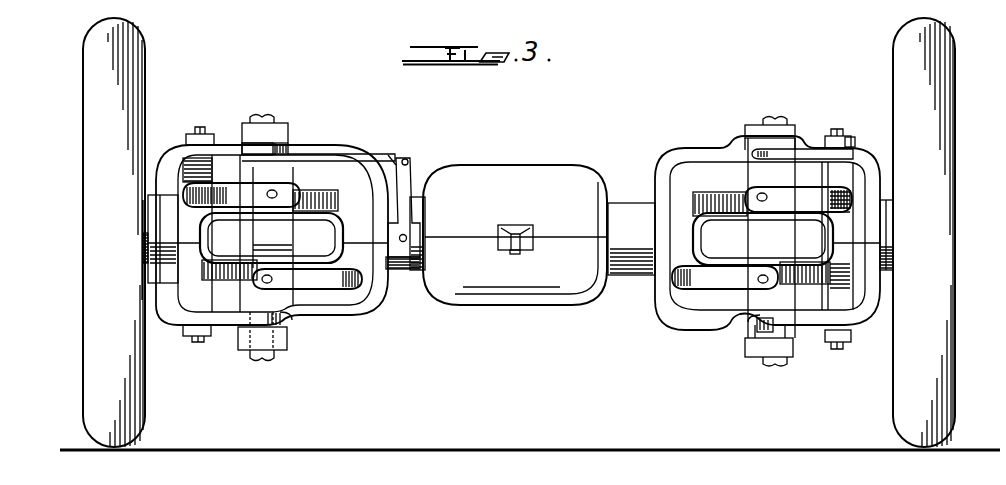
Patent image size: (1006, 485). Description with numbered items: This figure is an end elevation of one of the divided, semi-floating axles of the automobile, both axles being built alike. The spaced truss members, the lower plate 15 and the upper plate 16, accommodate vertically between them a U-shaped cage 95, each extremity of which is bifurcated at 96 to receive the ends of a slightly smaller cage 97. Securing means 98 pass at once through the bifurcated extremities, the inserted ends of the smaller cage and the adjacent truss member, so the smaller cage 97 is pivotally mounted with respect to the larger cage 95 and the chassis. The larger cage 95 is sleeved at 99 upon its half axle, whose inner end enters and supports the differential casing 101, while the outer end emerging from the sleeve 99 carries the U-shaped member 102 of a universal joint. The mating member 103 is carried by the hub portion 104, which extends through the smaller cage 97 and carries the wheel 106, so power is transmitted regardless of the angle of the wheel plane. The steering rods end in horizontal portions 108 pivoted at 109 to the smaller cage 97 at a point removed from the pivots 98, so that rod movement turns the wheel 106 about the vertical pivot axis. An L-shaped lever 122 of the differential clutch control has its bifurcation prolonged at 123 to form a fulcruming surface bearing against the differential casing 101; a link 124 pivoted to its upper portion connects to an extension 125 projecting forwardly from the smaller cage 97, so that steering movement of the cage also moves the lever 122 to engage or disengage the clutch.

The lower elongated steel plate 15 is at (270, 342).
The upper plate 16 is at (277, 126).
The U-shaped cage 95 is at (369, 178).
The bifurcated extremities 96 is at (292, 318).
The smaller cage 97 is at (808, 155).
The securing means 98 is at (262, 117).
The sleeve 99 is at (415, 200).
The differential casing 101 is at (493, 178).
The U-shaped member of universal joint 102 is at (710, 272).
The similar member of universal joint 103 is at (807, 192).
The hub portion 104 is at (893, 232).
The wheel 106 is at (519, 232).
The horizontal portions 108 is at (192, 333).
The pivot 109 is at (196, 133).
The L-shaped lever 122 is at (402, 155).
The prolonged bifurcation 123 is at (417, 266).
The link 124 is at (329, 155).
The extension 125 is at (254, 143).